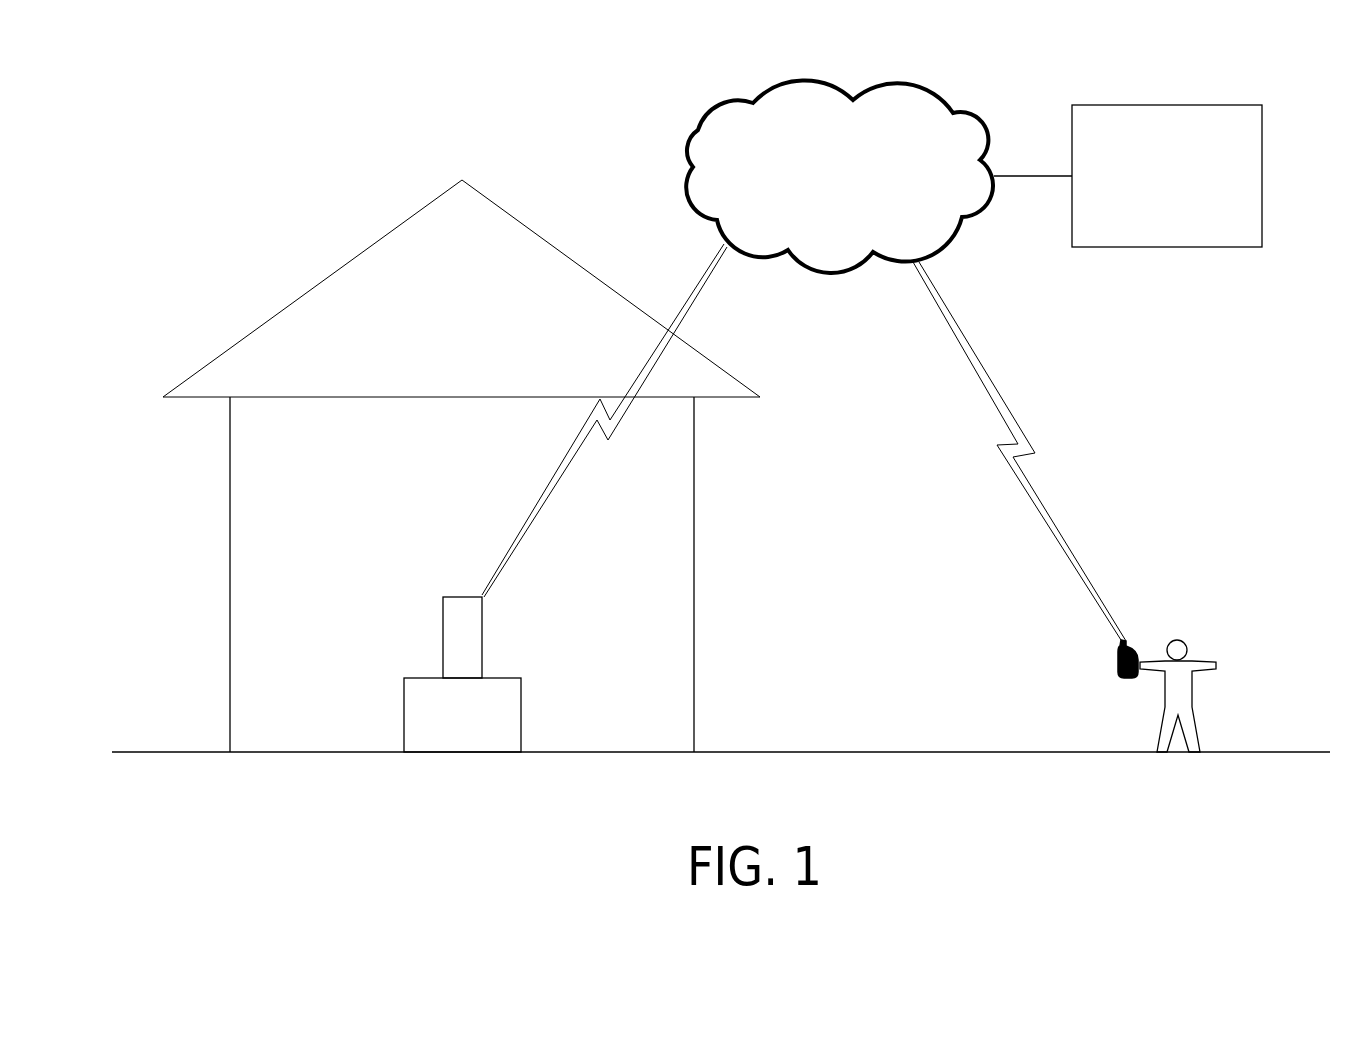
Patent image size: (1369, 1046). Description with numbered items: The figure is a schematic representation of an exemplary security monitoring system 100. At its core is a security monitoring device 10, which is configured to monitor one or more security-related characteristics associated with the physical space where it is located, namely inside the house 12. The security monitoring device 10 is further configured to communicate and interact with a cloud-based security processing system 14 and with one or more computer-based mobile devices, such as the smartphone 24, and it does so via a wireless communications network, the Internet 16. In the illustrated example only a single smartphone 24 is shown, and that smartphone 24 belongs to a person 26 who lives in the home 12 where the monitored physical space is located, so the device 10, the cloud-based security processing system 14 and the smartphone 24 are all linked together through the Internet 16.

The security monitoring system 100 is at (292, 190).
The security monitoring device 10 is at (441, 627).
The house 12 is at (230, 537).
The cloud-based security processing system 14 is at (1167, 176).
The Internet 16 is at (879, 176).
The smartphone 24 is at (1108, 663).
The person 26 is at (1184, 615).